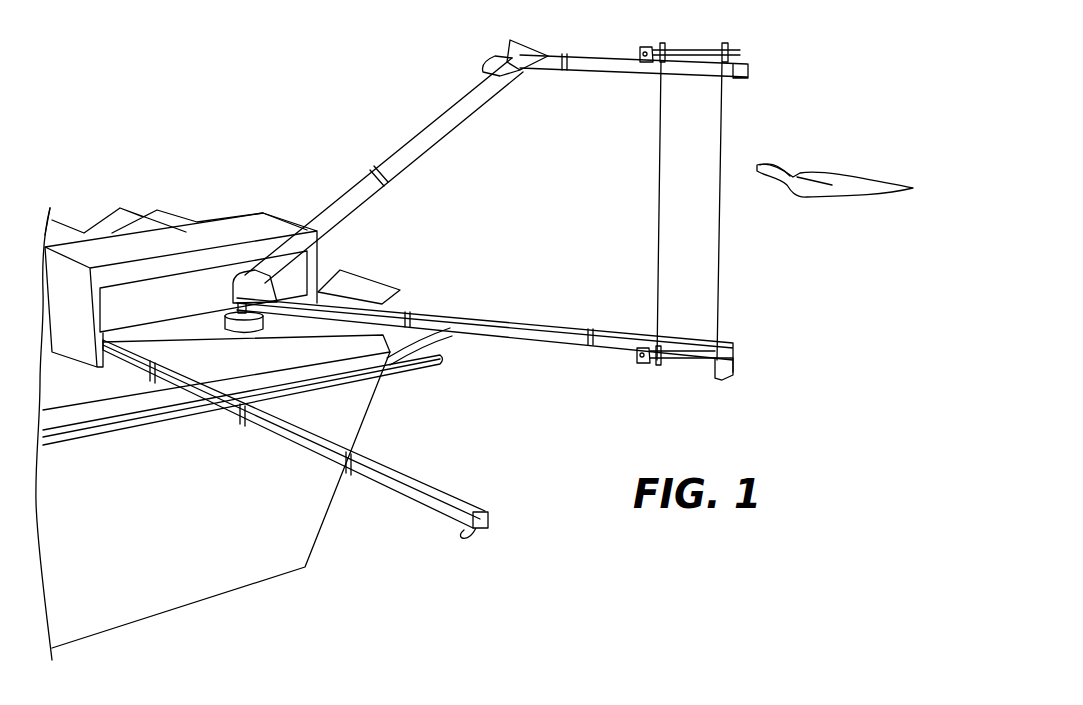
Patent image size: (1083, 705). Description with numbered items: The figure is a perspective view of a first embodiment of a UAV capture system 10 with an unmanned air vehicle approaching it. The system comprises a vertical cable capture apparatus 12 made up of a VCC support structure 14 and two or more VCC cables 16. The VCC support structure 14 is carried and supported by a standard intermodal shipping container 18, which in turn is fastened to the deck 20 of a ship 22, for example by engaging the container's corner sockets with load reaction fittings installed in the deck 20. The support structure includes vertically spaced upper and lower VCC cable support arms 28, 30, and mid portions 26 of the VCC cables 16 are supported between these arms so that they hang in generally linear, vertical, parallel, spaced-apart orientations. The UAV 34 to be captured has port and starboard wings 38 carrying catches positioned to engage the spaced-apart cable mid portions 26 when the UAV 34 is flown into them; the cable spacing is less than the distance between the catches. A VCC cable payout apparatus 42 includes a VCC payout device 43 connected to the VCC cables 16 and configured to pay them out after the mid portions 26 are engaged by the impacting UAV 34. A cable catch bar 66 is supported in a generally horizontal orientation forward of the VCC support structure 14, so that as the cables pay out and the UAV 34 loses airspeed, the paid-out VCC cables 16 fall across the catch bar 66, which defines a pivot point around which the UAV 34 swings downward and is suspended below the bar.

The UAV capture system 10 is at (204, 122).
The vertical cable capture apparatus 12 is at (396, 161).
The VCC support structure 14 is at (401, 132).
The VCC cables 16 is at (633, 211).
The intermodal shipping container 18 is at (110, 235).
The deck 20 is at (53, 387).
The ship 22 is at (94, 604).
The mid portions 26 is at (660, 127).
The upper VCC cable support arm 28 is at (598, 60).
The lower VCC cable support arm 30 is at (527, 320).
The UAV 34 is at (857, 170).
The wings 38 is at (773, 165).
The VCC cable payout apparatus 42 is at (738, 36).
The VCC payout device 43 is at (688, 50).
The cable catch bar 66 is at (433, 493).